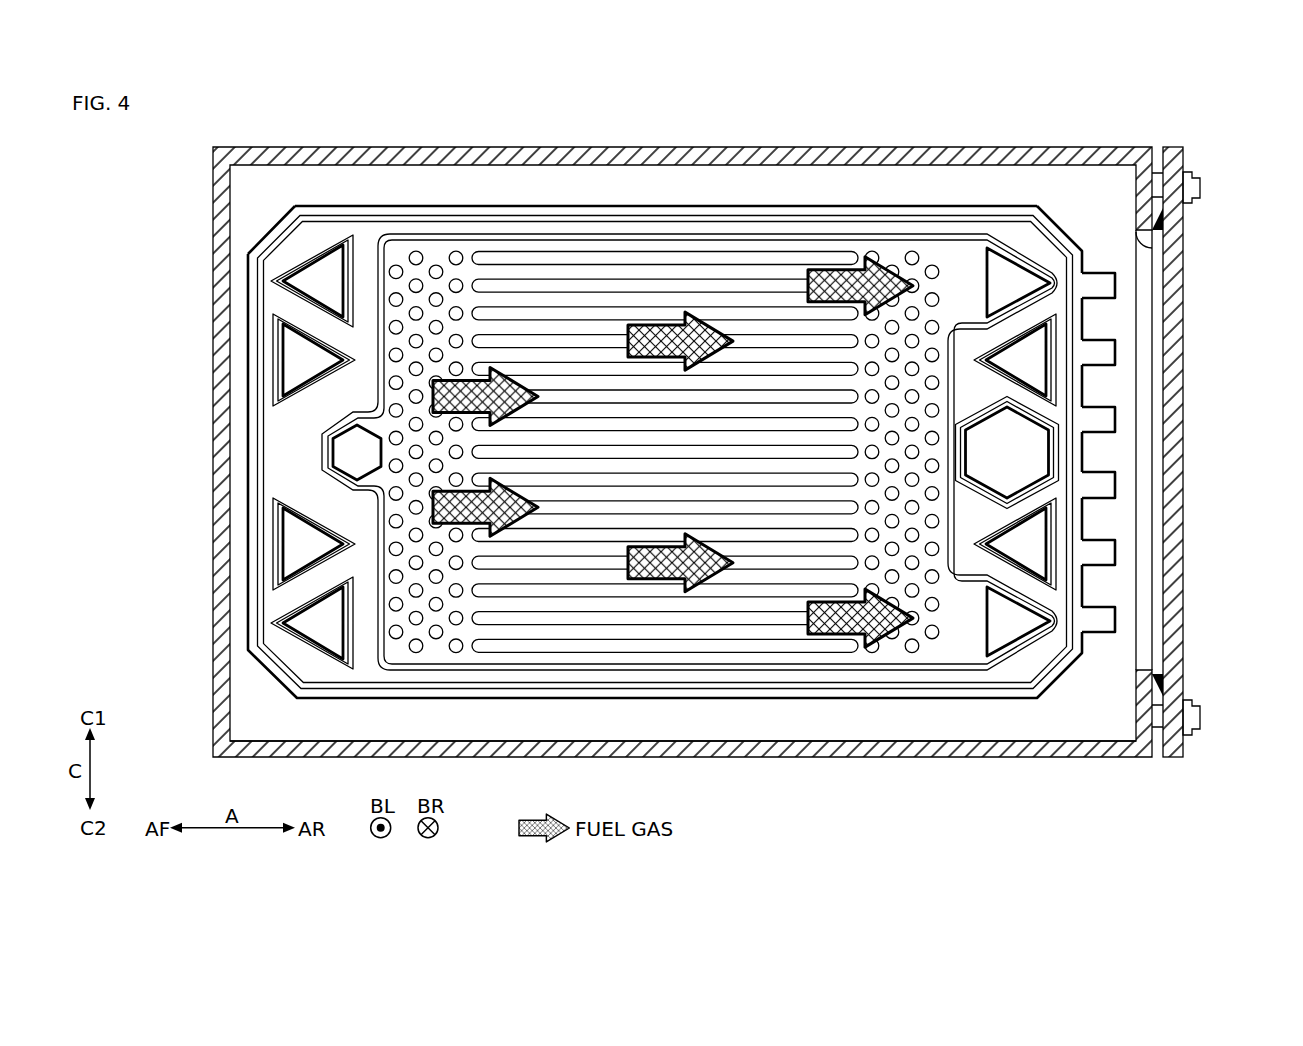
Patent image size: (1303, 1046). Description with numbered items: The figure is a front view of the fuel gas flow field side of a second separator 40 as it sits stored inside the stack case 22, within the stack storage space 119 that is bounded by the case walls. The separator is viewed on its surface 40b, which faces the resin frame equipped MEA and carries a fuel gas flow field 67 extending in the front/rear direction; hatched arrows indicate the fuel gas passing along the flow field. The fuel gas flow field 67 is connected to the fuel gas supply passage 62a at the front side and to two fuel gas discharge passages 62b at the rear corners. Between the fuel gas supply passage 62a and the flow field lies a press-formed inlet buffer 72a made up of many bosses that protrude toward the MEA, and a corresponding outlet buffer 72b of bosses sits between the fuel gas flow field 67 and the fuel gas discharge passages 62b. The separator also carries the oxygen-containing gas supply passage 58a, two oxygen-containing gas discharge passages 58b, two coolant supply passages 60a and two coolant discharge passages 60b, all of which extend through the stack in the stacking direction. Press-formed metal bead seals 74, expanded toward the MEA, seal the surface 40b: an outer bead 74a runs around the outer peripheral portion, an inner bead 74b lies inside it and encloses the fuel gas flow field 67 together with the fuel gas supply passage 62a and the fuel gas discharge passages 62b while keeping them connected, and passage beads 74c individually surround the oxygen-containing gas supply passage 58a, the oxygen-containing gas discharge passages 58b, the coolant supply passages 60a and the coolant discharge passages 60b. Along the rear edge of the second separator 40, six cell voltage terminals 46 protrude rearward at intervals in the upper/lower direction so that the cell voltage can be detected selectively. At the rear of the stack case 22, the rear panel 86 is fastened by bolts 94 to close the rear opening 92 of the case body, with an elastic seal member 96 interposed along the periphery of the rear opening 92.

The stack case 22 is at (874, 152).
The second separator 40 is at (590, 205).
The surface 40b is at (630, 213).
The cell voltage terminal 46 is at (1097, 621).
The oxygen-containing gas supply passage 58a is at (1038, 458).
The oxygen-containing gas discharge passage 58b is at (310, 277).
The coolant supply passage 60a is at (1038, 350).
The coolant discharge passage 60b is at (308, 360).
The fuel gas supply passage 62a is at (350, 447).
The fuel gas discharge passage 62b is at (1023, 285).
The fuel gas flow field 67 is at (684, 272).
The inlet buffer 72a is at (416, 250).
The outlet buffer 72b is at (912, 250).
The metal bead seal 74 is at (670, 475).
The outer bead 74a is at (253, 610).
The inner bead 74b is at (375, 602).
The passage bead 74c is at (272, 284).
The rear panel 86 is at (1180, 157).
The rear opening 92 is at (1165, 252).
The bolt 94 is at (1200, 187).
The seal member 96 is at (1160, 223).
The stack storage space 119 is at (815, 722).